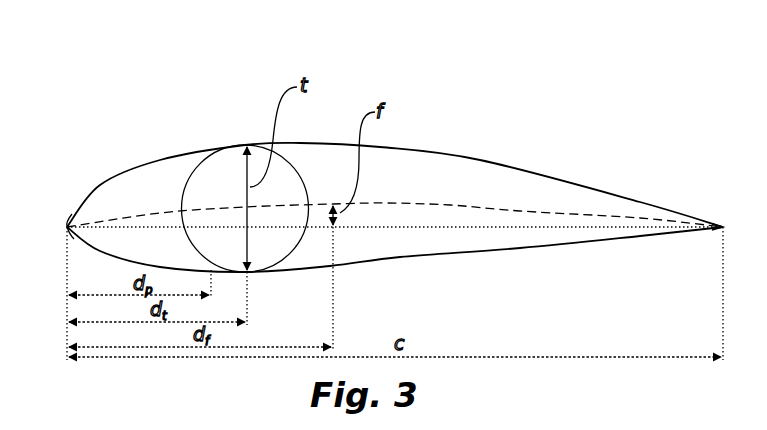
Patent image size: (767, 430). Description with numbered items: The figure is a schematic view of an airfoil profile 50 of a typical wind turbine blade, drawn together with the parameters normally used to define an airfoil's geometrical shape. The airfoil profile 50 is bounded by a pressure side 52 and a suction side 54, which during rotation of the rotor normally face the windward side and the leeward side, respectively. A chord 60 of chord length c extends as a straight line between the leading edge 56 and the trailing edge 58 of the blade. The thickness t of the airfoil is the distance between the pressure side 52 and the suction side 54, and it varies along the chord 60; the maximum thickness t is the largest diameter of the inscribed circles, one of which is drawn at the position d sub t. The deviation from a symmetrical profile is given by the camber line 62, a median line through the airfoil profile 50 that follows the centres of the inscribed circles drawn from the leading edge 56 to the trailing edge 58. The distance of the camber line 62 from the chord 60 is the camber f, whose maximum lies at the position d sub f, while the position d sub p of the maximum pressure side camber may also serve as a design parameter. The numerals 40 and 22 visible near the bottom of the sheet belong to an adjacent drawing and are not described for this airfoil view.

The airfoil profile 50 is at (381, 167).
The pressure side 52 is at (523, 248).
The suction side 54 is at (473, 157).
The leading edge 56 is at (67, 227).
The trailing edge 58 is at (723, 227).
The chord 60 is at (557, 227).
The camber line 62 is at (387, 203).
The blade 40 is at (12, 393).
The hub 22 is at (192, 426).